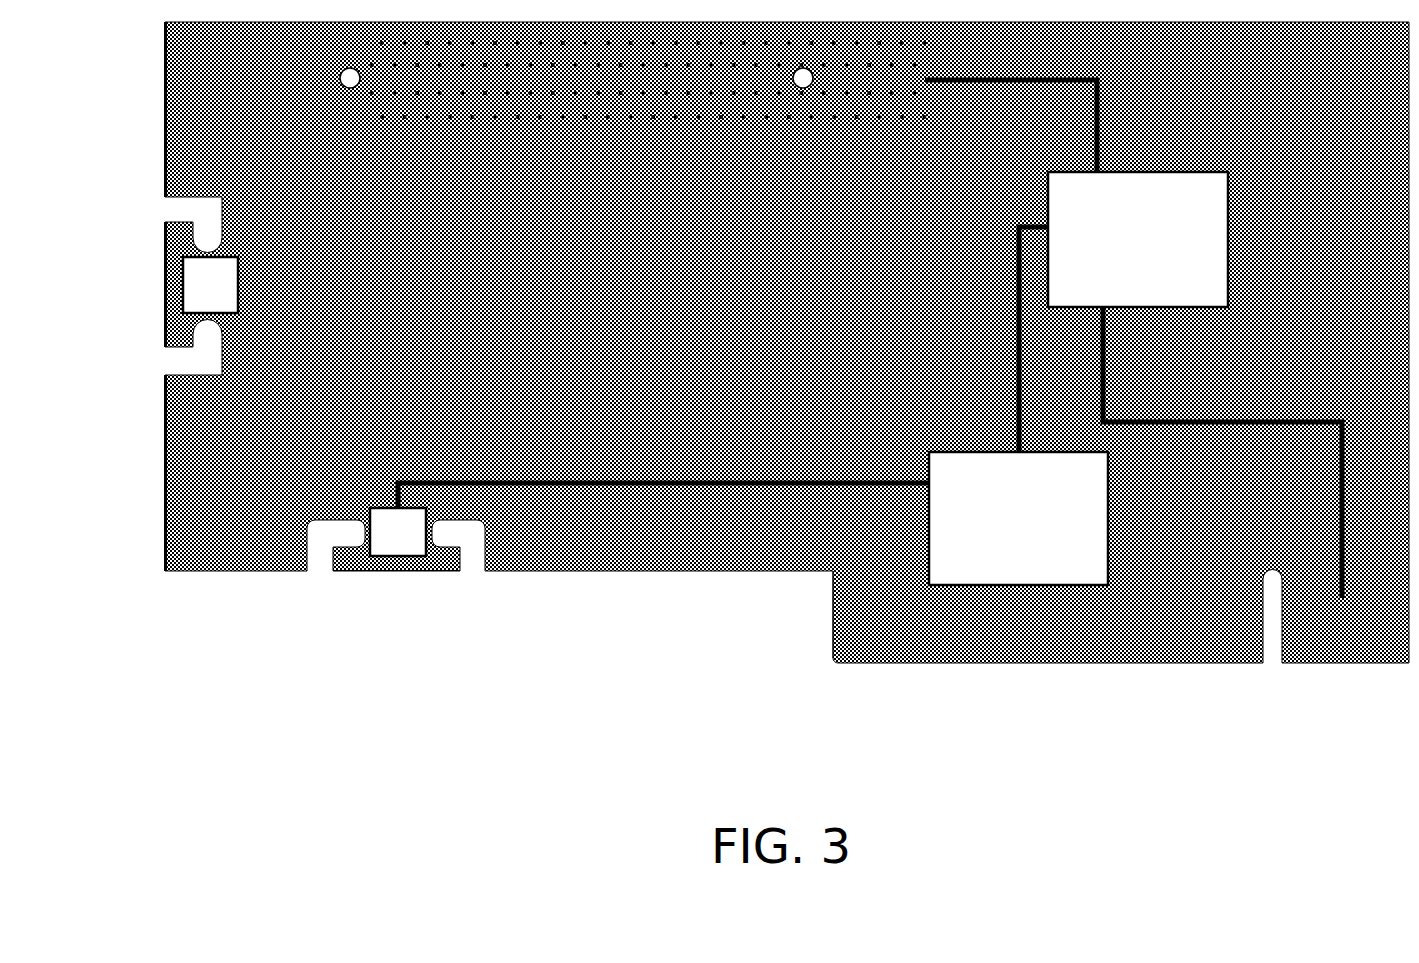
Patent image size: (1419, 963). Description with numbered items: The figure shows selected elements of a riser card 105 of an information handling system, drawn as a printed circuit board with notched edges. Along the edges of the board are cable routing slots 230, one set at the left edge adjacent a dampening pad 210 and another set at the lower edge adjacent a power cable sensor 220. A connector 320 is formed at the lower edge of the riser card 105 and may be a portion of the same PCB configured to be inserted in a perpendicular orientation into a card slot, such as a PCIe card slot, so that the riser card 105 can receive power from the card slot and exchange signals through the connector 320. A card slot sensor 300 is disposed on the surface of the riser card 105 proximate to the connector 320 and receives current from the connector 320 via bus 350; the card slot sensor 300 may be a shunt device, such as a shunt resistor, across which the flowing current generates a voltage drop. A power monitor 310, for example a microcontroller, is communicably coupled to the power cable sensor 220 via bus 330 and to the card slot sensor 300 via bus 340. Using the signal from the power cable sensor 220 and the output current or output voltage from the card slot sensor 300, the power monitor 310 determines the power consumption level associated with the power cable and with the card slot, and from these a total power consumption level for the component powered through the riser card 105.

The riser card 105 is at (787, 342).
The dampening pad 210 is at (210, 285).
The power cable sensor 220 is at (398, 532).
The cable routing slots 230 is at (137, 278).
The card slot sensor 300 is at (1138, 239).
The power monitor 310 is at (1018, 518).
The connector 320 is at (799, 625).
The bus 330 is at (632, 481).
The bus 340 is at (1017, 379).
The bus 350 is at (1105, 379).